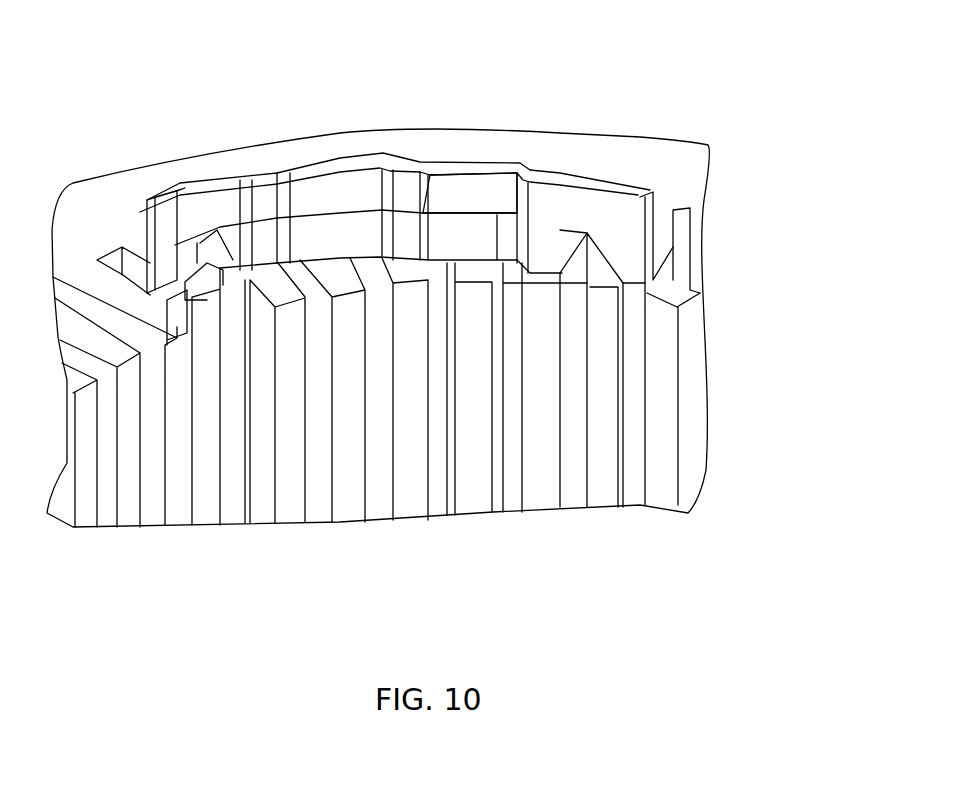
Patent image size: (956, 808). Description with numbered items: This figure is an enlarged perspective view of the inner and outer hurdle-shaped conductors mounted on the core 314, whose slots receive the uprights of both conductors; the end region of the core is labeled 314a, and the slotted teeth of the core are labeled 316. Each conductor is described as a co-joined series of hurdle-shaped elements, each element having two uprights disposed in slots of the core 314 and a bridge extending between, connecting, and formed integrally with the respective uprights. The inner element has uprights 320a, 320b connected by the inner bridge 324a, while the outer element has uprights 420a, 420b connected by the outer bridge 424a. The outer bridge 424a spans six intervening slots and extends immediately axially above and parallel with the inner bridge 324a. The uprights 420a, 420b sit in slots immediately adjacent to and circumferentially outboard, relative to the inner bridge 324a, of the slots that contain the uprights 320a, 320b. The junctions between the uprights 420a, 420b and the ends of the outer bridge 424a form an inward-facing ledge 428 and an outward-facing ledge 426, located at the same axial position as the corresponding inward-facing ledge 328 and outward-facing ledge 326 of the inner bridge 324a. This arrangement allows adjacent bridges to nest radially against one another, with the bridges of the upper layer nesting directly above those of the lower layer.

The core 314 is at (752, 285).
The end wall 314a is at (680, 163).
The fins 316 is at (262, 508).
The upright 320a is at (243, 313).
The upright 320b is at (567, 503).
The inner bridge 324a is at (332, 238).
The outward-facing ledge 326 is at (587, 275).
The inward-facing ledge 328 is at (225, 245).
The upright 420a is at (195, 300).
The upright 420b is at (635, 503).
The outer bridge 424a is at (480, 187).
The outward-facing ledge 426 is at (653, 267).
The inward-facing ledge 428 is at (185, 285).